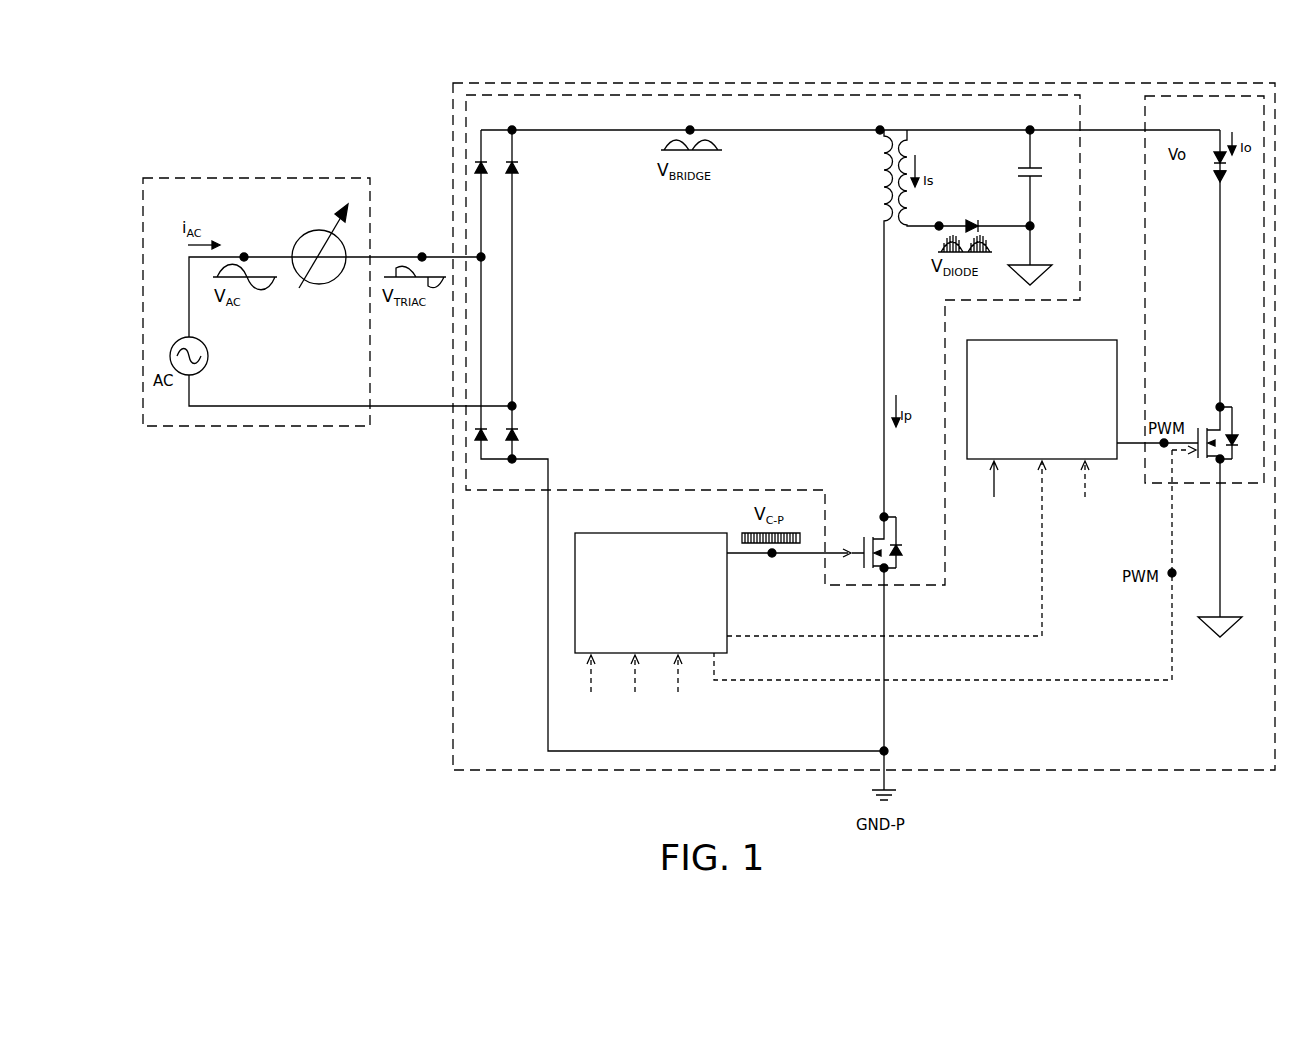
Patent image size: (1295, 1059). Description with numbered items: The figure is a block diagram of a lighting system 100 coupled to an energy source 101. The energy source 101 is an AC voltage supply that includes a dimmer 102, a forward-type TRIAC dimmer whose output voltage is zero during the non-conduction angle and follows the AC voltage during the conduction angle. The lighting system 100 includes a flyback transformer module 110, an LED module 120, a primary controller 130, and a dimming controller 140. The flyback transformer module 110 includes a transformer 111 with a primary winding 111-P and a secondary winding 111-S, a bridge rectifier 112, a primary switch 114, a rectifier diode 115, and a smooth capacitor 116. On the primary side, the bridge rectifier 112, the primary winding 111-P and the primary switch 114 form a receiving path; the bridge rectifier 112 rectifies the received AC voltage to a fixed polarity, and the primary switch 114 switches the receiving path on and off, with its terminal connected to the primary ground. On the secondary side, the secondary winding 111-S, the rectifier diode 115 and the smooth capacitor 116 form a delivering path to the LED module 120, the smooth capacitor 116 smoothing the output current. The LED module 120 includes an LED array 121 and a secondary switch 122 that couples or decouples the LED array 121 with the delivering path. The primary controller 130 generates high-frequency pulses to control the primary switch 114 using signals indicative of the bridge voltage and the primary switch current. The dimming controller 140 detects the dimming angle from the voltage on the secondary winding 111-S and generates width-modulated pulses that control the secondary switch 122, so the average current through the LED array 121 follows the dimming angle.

The lighting system 100 is at (1247, 83).
The energy source 101 is at (345, 178).
The dimmer 102 is at (320, 285).
The flyback transformer module 110 is at (1083, 233).
The transformer 111 is at (1026, 308).
The primary winding 111-P is at (863, 321).
The secondary winding 111-S is at (903, 142).
The bridge rectifier 112 is at (497, 233).
The primary switch 114 is at (883, 540).
The rectifier diode 115 is at (973, 222).
The smooth capacitor 116 is at (1040, 163).
The LED module 120 is at (1143, 111).
The LED array 121 is at (1213, 176).
The secondary switch 122 is at (1217, 428).
The primary controller 130 is at (607, 533).
The dimming controller 140 is at (1070, 340).